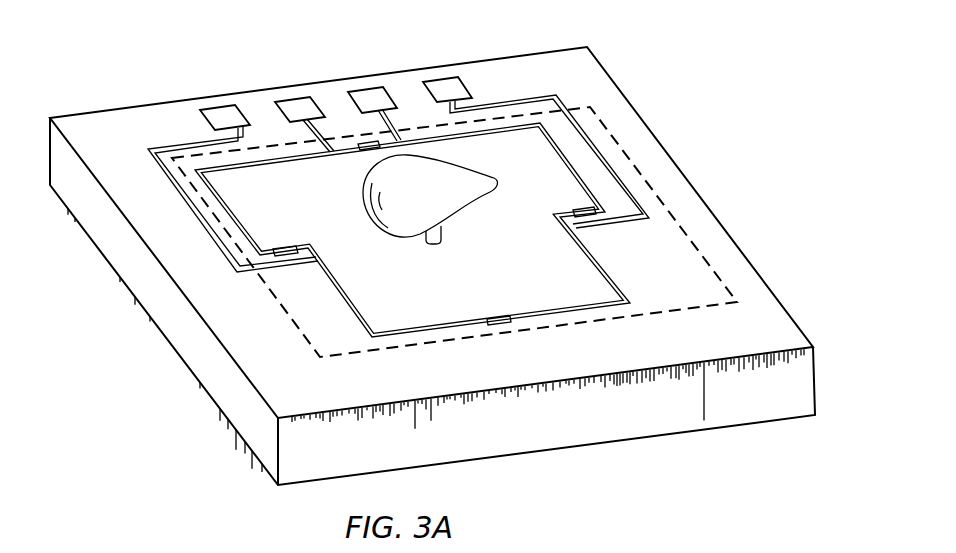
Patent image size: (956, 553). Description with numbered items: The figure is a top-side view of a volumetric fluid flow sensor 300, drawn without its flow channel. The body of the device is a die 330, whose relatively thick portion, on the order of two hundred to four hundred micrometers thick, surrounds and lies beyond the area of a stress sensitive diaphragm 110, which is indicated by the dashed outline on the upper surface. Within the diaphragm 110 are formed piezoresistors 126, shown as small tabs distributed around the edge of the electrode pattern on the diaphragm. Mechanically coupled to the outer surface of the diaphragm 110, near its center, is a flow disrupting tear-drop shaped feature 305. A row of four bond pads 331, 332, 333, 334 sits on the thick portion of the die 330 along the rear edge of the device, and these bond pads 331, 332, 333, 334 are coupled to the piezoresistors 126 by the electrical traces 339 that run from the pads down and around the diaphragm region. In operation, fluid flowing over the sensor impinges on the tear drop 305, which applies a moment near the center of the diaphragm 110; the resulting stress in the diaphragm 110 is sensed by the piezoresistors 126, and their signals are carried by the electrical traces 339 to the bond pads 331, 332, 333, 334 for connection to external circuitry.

The volumetric fluid flow sensor 300 is at (138, 362).
The die 330 is at (762, 308).
The stress sensitive diaphragm 110 is at (655, 320).
The electrical traces 339 is at (608, 163).
The bond pad 331 is at (222, 118).
The bond pad 332 is at (307, 104).
The bond pad 333 is at (378, 94).
The bond pad 334 is at (450, 85).
The piezoresistors 126 is at (380, 145).
The flow disrupting tear-drop shaped feature 305 is at (366, 186).